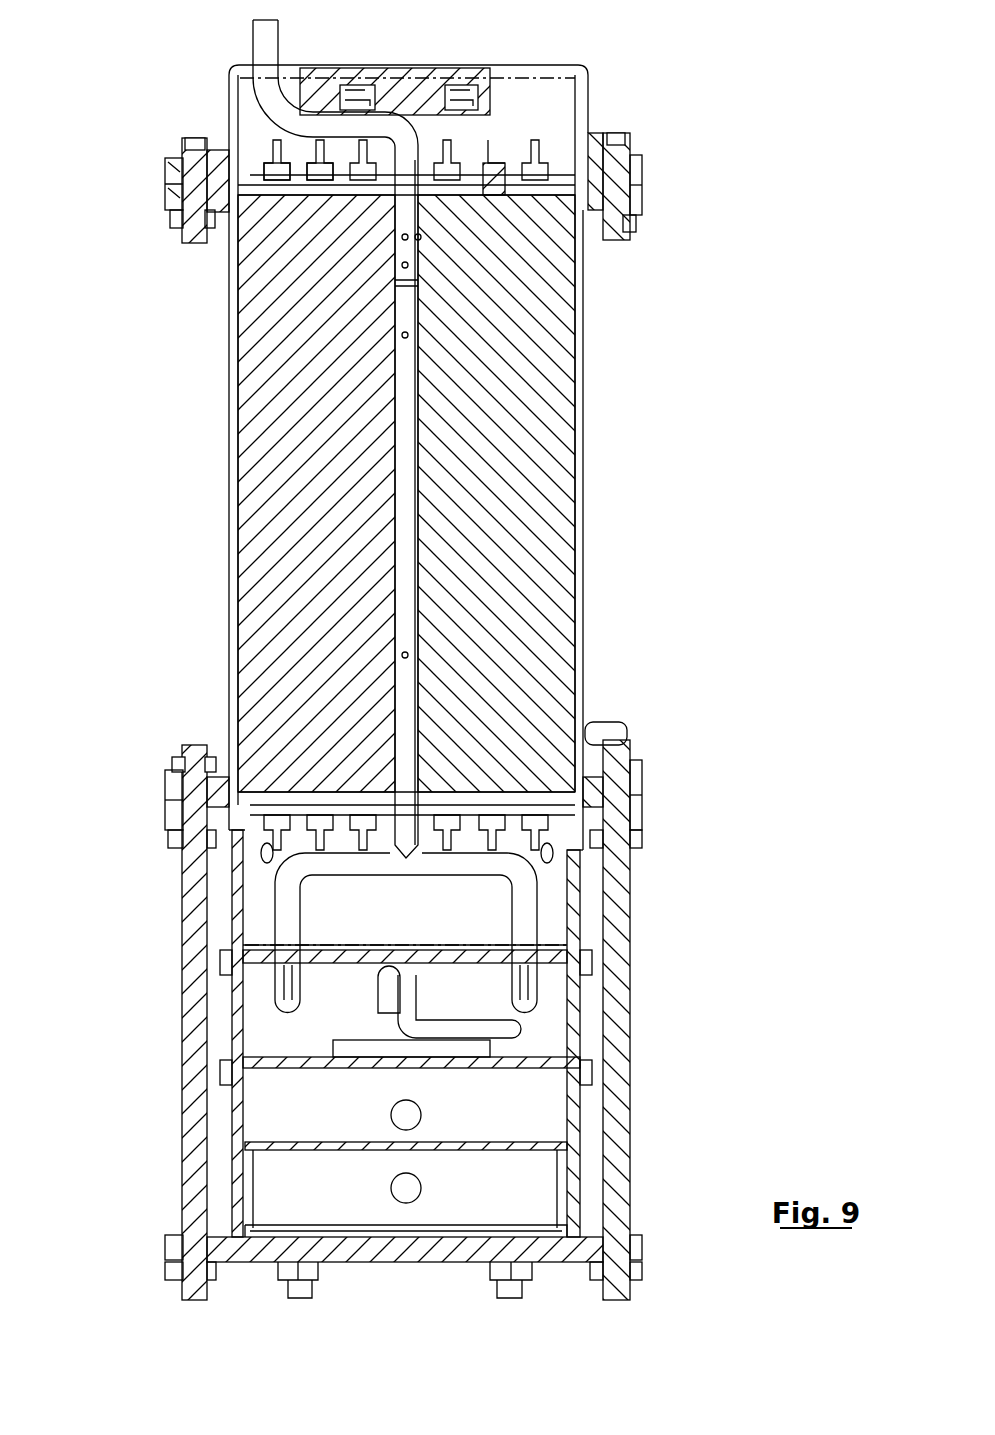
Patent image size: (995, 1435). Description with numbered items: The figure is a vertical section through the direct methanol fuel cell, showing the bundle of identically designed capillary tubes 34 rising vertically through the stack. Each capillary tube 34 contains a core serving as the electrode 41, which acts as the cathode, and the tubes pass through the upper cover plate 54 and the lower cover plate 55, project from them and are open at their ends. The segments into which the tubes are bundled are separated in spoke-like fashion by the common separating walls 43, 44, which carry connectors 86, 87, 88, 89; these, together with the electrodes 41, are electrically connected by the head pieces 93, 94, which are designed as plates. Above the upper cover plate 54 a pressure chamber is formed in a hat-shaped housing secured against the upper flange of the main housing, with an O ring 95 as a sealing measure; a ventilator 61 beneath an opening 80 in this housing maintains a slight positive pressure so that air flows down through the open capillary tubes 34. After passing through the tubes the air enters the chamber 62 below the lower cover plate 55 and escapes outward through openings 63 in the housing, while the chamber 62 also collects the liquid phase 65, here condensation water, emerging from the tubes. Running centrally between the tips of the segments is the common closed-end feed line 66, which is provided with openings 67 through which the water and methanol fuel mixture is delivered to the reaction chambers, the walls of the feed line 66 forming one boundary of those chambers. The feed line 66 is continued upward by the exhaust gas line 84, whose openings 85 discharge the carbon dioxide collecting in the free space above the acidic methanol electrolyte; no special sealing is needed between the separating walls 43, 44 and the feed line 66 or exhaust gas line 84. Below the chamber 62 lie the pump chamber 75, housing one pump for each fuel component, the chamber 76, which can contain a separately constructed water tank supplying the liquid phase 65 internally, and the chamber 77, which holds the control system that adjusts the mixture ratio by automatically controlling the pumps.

The exhaust gas line 84 is at (268, 38).
The ventilator 61 is at (343, 85).
The opening 80 is at (450, 70).
The electrode 41 is at (493, 163).
The connector 88 is at (505, 185).
The capillary tube 34 is at (550, 163).
The O ring 95 is at (590, 182).
The connector 86 is at (330, 178).
The head piece 93 is at (292, 175).
The cover plate 54 is at (228, 170).
The openings 85 is at (402, 266).
The openings 67 is at (410, 333).
The feed line 66 is at (420, 470).
The common separating wall 43 is at (265, 560).
The common separating wall 44 is at (550, 585).
The connector 87 is at (250, 790).
The connector 89 is at (585, 770).
The cover plate 55 is at (250, 795).
The chamber 62 is at (258, 905).
The pump chamber 75 is at (260, 1030).
The chamber 76 is at (260, 1117).
The chamber 77 is at (282, 1188).
The head piece 94 is at (597, 833).
The openings 63 is at (572, 867).
The liquid phase 65 is at (590, 963).